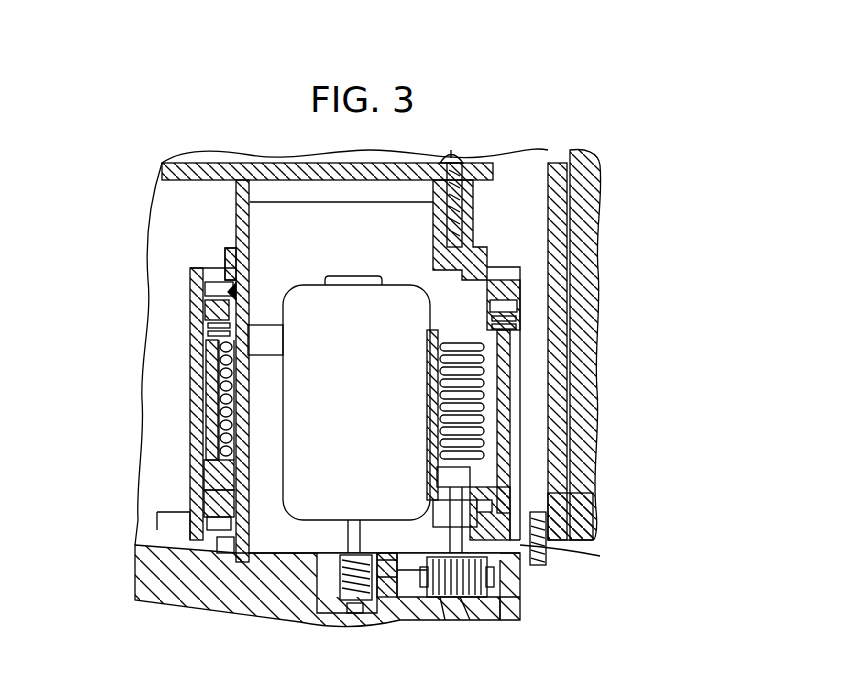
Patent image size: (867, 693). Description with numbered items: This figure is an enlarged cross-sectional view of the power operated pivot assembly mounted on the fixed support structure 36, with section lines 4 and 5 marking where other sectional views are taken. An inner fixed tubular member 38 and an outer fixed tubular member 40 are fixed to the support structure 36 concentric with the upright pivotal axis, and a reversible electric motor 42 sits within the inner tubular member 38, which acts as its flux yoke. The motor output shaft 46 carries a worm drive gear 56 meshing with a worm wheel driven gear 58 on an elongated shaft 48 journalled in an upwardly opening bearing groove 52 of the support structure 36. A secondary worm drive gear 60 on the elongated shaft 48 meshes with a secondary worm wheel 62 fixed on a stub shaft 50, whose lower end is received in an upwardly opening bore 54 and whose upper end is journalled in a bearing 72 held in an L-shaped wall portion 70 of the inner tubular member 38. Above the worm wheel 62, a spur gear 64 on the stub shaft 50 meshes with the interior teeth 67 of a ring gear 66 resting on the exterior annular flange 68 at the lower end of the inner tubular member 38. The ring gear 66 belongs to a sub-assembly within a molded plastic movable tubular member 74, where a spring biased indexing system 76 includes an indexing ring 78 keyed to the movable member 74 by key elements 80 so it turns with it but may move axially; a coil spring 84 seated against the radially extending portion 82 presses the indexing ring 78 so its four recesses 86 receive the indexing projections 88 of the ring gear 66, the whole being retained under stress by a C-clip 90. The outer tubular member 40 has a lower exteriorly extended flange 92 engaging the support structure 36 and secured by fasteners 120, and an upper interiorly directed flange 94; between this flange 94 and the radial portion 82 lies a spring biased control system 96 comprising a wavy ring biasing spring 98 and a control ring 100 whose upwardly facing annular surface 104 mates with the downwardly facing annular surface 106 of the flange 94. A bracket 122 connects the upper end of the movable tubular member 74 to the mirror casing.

The fixed support structure 36 is at (210, 597).
The inner fixed tubular member 38 is at (216, 410).
The outer fixed tubular member 40 is at (203, 326).
The reversible electric motor 42 is at (363, 413).
The output shaft 46 is at (348, 522).
The elongated shaft 48 is at (383, 577).
The stub shaft 50 is at (440, 552).
The bearing groove 52 is at (490, 594).
The bore 54 is at (473, 600).
The drive gear 56 is at (357, 612).
The driven gear 58 is at (335, 592).
The secondary drive gear 60 is at (492, 576).
The secondary driven gear 62 is at (450, 600).
The spur gear 64 is at (433, 500).
The ring gear 66 is at (490, 525).
The teeth 67 is at (483, 510).
The exterior annular flange 68 is at (222, 545).
The L-shaped wall portion 70 is at (437, 345).
The bearing 72 is at (520, 487).
The movable tubular member 74 is at (490, 470).
The spring biased indexing system 76 is at (205, 478).
The indexing ring 78 is at (487, 497).
The key elements 80 is at (473, 500).
The radially extending portion 82 is at (520, 340).
The coil spring 84 is at (200, 358).
The recesses 86 is at (205, 492).
The indexing projections 88 is at (210, 525).
The C-clip 90 is at (548, 518).
The exteriorly extended flange 92 is at (165, 530).
The interiorly directed flange 94 is at (222, 268).
The spring biased control system 96 is at (186, 308).
The biasing spring 98 is at (480, 303).
The control ring 100 is at (505, 318).
The inner upwardly facing annular surface 104 is at (240, 262).
The inner downwardly facing annular surface 106 is at (422, 287).
The fasteners 120 is at (540, 548).
The bracket 122 is at (395, 178).
The section line 4- 4 is at (175, 505).
The section line 5- 5 is at (175, 300).